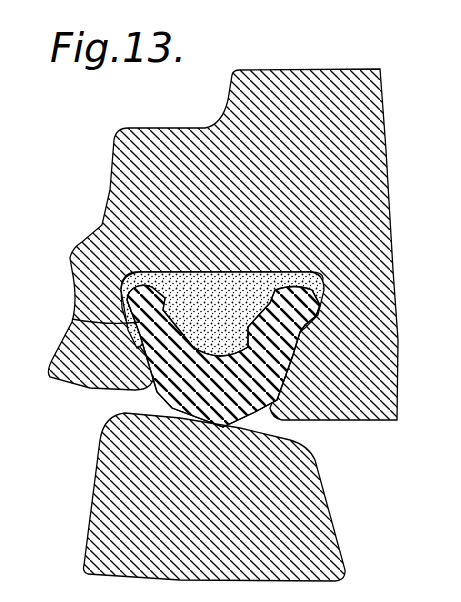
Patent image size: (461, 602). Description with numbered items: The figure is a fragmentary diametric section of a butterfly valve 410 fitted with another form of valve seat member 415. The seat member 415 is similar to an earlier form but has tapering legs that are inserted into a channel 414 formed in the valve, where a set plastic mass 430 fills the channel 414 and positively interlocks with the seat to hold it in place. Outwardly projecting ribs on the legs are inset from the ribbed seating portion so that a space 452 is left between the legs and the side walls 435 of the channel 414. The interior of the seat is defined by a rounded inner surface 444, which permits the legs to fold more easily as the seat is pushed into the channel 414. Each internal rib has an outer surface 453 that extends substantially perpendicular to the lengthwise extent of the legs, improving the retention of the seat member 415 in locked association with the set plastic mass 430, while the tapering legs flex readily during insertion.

The butterfly valve 410 is at (300, 80).
The channel 414 is at (246, 282).
The valve seat member 415 is at (122, 400).
The set plastic mass 430 is at (170, 268).
The side walls 435 is at (82, 321).
The inner surface 444 is at (232, 357).
The space 452 is at (303, 340).
The outer surface 453 is at (267, 292).